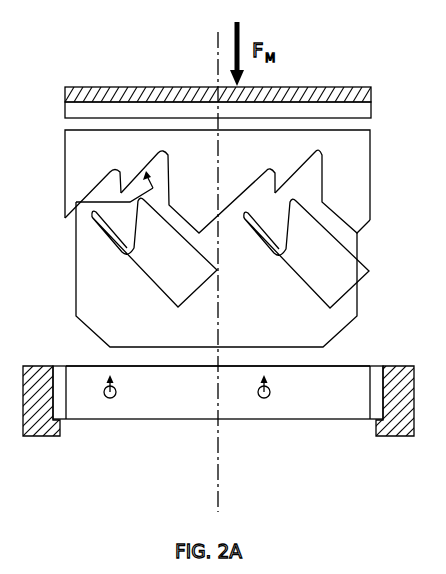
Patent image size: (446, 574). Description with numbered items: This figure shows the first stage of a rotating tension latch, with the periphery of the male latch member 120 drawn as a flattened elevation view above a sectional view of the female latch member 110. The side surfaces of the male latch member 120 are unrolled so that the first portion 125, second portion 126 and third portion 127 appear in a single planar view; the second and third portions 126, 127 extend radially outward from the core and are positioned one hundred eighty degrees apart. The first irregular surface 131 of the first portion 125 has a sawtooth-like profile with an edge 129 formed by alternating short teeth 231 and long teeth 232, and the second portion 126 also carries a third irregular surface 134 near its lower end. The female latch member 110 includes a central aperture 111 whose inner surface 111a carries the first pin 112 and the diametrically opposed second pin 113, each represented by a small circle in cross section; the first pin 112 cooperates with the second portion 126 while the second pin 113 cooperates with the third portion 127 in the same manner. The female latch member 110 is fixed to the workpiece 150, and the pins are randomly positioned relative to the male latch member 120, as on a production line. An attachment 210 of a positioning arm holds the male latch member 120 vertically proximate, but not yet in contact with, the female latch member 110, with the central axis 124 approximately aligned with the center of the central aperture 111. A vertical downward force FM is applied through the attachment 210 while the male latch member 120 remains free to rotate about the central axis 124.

The female latch member 110 is at (228, 400).
The central aperture 111 is at (192, 376).
The inner surface 111a is at (183, 398).
The first pin 112 is at (112, 400).
The second pin 113 is at (267, 398).
The male latch member 120 is at (326, 145).
The central axis 124 is at (215, 78).
The first portion 125 is at (100, 156).
The second portion 126 is at (185, 280).
The third portion 127 is at (325, 278).
The edge 129 is at (323, 178).
The first irregular surface 131 is at (76, 202).
The third irregular surface 134 is at (150, 289).
The workpiece 150 is at (38, 415).
The attachment 210 is at (273, 90).
The short teeth 231 is at (128, 173).
The long teeth 232 is at (188, 218).